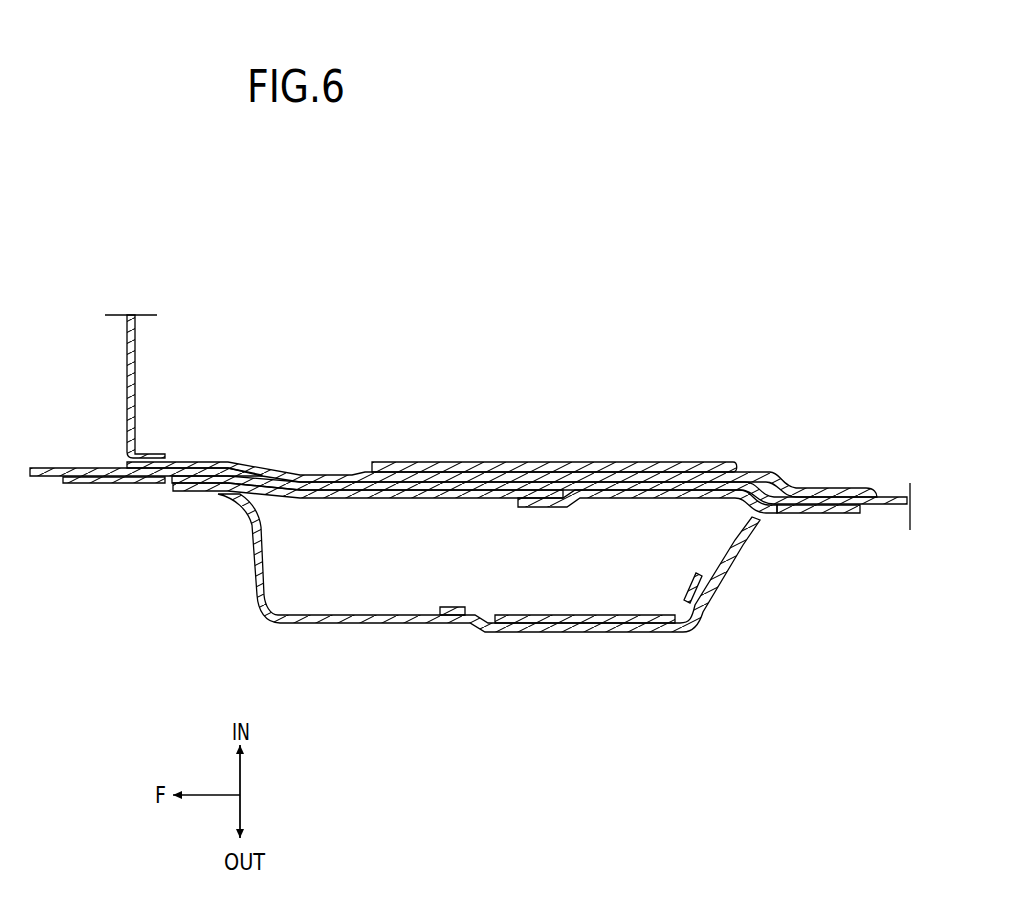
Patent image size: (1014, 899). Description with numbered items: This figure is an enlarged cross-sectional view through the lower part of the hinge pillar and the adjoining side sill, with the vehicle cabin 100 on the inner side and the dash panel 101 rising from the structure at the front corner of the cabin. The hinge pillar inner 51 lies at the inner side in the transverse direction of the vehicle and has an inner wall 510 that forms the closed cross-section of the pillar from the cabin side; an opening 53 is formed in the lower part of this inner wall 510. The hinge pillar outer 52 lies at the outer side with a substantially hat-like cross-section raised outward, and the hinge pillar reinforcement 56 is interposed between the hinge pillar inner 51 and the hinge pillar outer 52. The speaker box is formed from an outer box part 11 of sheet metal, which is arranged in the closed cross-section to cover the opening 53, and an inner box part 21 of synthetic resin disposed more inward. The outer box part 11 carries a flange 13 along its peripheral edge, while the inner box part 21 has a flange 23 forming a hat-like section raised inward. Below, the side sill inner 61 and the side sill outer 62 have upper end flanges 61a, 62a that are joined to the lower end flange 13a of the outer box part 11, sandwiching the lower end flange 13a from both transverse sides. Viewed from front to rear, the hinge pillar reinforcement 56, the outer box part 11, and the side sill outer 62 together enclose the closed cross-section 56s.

The vehicle cabin 100 is at (531, 305).
The dash panel 101 is at (135, 385).
The hinge pillar inner 51 is at (73, 468).
The upper end flange 62a is at (110, 484).
The side sill outer 62 is at (501, 521).
The upper end flange 61a is at (313, 475).
The side sill inner 61 is at (502, 462).
The lower end flange 13a is at (455, 471).
The flange 13 is at (554, 442).
The flange 23 is at (562, 478).
The inner box part 21 is at (587, 446).
The outer box part 11 is at (668, 476).
The opening 53 is at (496, 500).
The inner wall 510 is at (622, 498).
The hinge pillar outer 52 is at (393, 624).
The hinge pillar reinforcement 56 is at (615, 614).
The closed cross-section 56s is at (439, 576).